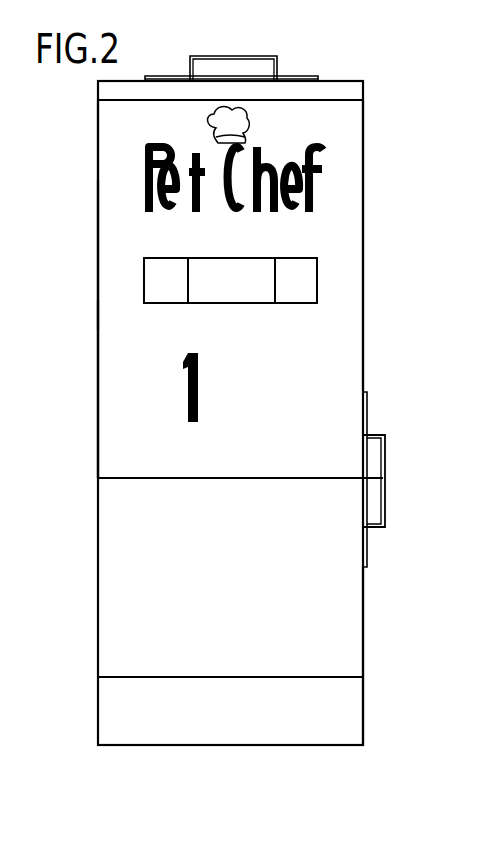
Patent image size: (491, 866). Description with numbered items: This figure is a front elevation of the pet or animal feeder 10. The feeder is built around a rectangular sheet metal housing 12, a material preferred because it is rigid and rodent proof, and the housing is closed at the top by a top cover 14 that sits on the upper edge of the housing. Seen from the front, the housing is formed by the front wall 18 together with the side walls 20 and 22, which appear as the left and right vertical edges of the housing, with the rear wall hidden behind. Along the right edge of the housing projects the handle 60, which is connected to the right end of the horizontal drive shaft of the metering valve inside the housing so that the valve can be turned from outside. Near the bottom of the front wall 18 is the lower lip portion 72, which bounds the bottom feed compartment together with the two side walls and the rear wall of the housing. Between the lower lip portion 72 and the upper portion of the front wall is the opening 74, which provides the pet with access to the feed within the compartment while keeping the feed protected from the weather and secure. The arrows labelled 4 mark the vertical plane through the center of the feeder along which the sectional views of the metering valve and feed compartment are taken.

The section line 4- 4 is at (198, 38).
The pet feeder 10 is at (346, 66).
The sheet metal housing 12 is at (93, 262).
The top cover 14 is at (131, 80).
The front wall 18 is at (110, 314).
The side wall 20 is at (98, 182).
The side wall 22 is at (363, 162).
The handle 60 is at (385, 499).
The lower lip portion 72 is at (343, 700).
The opening 74 is at (338, 640).